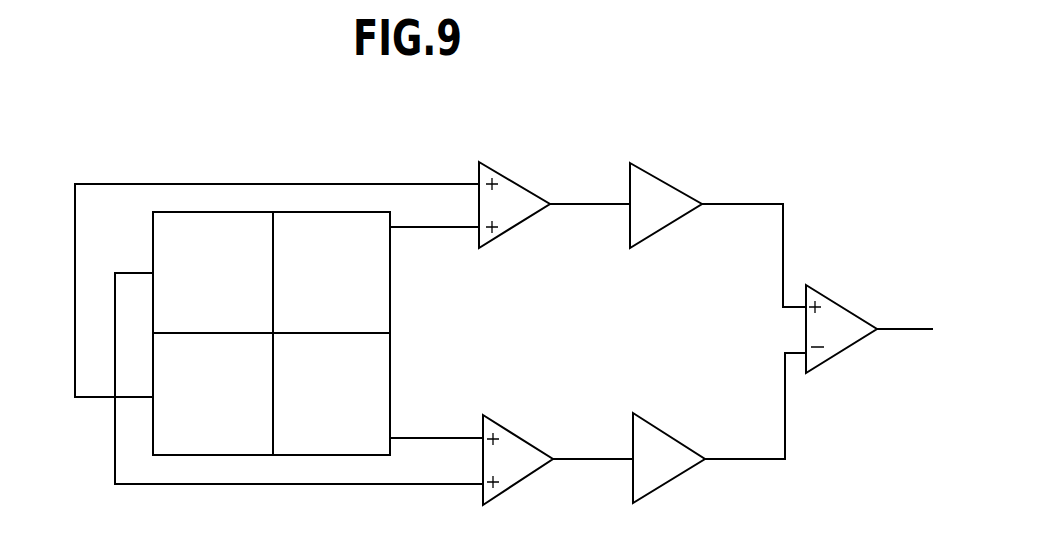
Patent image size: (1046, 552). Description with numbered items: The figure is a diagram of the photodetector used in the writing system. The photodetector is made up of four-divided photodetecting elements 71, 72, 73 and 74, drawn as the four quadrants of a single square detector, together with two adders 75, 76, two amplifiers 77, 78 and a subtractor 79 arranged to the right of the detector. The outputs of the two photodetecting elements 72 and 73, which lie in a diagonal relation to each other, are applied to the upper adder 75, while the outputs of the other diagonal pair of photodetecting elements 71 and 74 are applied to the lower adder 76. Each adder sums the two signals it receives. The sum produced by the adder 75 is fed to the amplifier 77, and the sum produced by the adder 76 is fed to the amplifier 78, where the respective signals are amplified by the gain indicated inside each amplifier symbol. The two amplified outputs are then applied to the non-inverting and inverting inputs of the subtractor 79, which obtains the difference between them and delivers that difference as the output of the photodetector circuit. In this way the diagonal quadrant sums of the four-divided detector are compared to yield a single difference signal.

The photodetecting element 71 is at (235, 290).
The photodetecting element 72 is at (348, 290).
The photodetecting element 73 is at (239, 410).
The photodetecting element 74 is at (361, 410).
The adder 75 is at (523, 192).
The adder 76 is at (530, 450).
The amplifier 77 is at (677, 190).
The amplifier 78 is at (673, 440).
The subtractor 79 is at (848, 313).